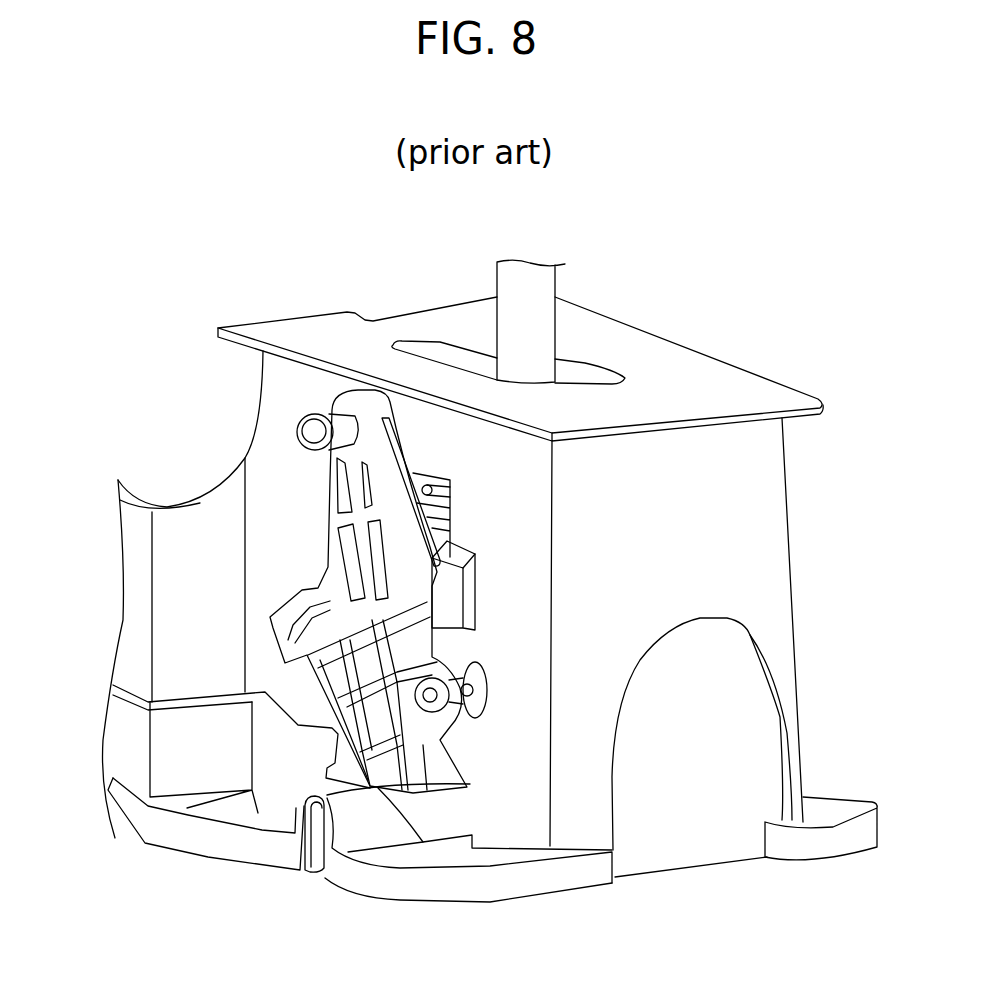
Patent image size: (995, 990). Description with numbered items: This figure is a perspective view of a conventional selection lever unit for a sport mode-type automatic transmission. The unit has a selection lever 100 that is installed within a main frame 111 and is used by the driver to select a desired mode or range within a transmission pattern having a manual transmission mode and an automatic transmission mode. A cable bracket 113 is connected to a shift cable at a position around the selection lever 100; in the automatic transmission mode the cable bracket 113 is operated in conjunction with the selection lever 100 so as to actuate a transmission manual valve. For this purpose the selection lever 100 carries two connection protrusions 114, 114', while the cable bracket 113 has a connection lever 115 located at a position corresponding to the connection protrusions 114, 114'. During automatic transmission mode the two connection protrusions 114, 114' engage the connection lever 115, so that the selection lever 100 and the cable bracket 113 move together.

The selection lever 100 is at (500, 283).
The main frame 111 is at (775, 558).
The cable bracket 113 is at (320, 592).
The connection protrusion 114 is at (539, 592).
The connection protrusion 114' is at (526, 522).
The connection lever 115 is at (465, 557).